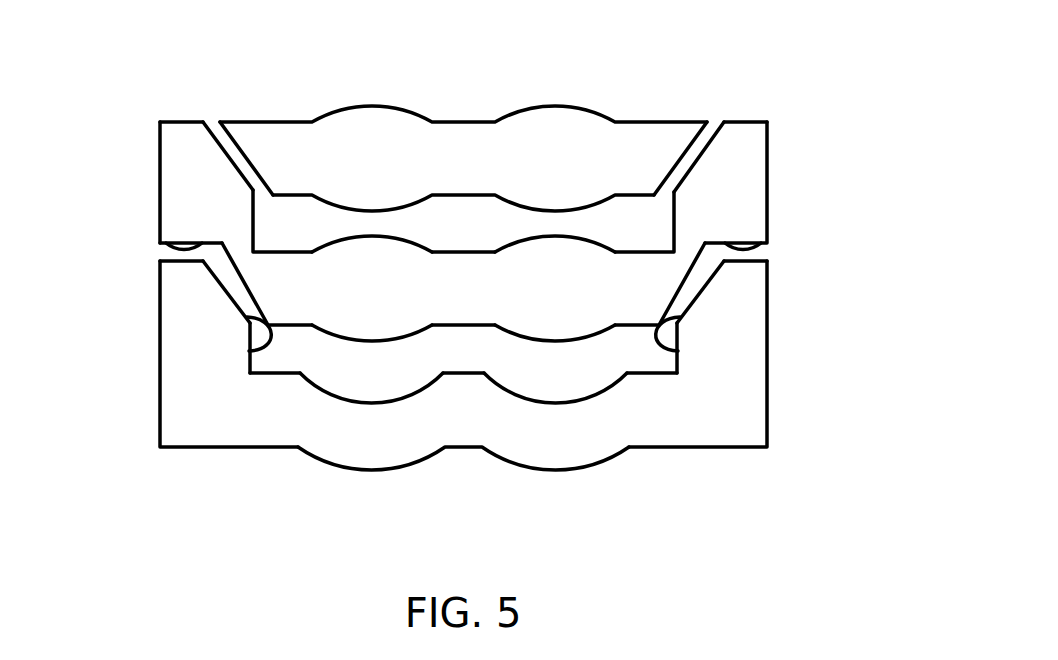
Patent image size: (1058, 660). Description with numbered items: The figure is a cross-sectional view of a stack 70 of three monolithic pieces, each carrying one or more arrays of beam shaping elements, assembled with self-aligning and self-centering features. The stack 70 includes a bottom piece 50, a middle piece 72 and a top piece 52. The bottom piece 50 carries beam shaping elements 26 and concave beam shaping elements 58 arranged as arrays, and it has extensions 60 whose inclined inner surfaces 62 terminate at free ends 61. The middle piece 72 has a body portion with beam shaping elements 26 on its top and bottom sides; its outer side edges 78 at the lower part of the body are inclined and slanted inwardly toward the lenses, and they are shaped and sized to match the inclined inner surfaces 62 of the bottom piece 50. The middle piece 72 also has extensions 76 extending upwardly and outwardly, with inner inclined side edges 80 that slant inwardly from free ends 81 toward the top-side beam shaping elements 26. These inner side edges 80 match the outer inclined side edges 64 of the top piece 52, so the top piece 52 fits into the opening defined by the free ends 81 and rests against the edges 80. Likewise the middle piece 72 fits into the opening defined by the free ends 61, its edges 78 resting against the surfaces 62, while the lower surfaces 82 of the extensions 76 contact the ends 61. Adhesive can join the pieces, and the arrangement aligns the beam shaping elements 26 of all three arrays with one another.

The stack 70 is at (840, 70).
The extensions 76 is at (160, 162).
The free ends 81 is at (170, 122).
The outer inclined side edges 64 is at (237, 148).
The inner inclined side edges 80 is at (252, 182).
The top piece 52 is at (452, 171).
The beam shaping elements 26 is at (405, 231).
The middle piece 72 is at (452, 298).
The lower surfaces 82 is at (175, 247).
The free ends 61 is at (165, 262).
The outer side edges 78 is at (238, 293).
The extensions 60 is at (173, 360).
The inclined inner surfaces 62 is at (252, 350).
The bottom piece 50 is at (456, 418).
The beam shaping elements 58 is at (360, 403).